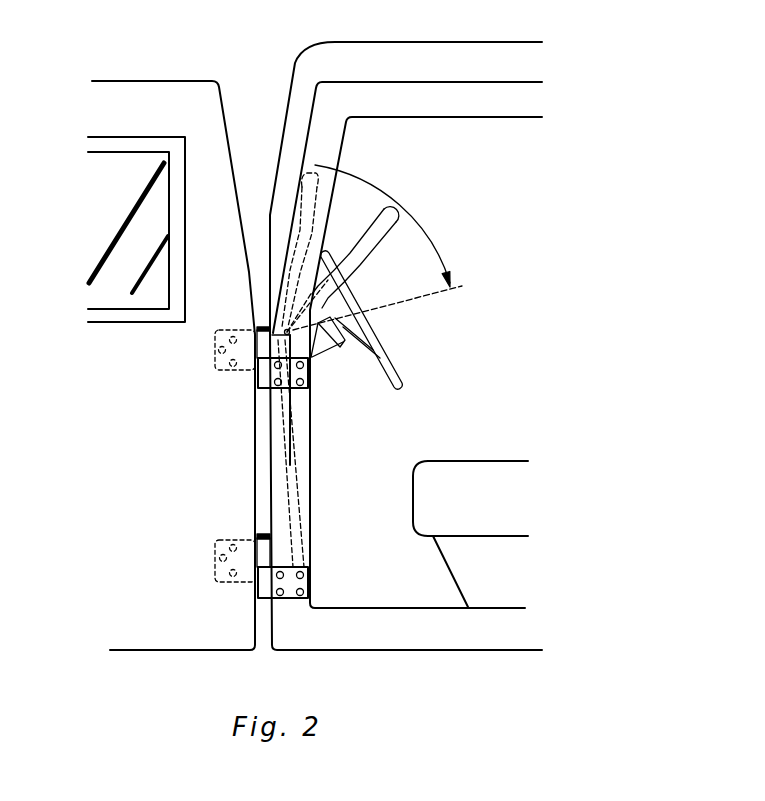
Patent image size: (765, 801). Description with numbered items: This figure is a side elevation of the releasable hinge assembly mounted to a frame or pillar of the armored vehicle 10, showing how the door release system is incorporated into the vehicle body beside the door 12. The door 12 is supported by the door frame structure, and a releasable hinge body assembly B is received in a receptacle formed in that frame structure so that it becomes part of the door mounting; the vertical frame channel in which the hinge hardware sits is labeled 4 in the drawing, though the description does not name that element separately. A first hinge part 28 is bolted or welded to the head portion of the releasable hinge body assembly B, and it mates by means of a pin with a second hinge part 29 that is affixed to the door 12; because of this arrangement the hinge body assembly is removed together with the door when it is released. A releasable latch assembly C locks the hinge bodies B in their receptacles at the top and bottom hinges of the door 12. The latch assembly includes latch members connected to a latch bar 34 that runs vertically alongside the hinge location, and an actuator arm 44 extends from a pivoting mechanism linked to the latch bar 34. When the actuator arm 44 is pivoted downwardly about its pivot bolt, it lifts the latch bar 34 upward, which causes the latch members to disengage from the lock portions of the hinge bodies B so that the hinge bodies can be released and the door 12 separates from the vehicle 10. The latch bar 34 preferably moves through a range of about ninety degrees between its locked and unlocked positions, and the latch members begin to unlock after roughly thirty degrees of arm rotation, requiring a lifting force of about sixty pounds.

The armored vehicle 10 is at (424, 42).
The door 12 is at (136, 80).
The second hinge part 29 is at (215, 356).
The first hinge part 28 is at (255, 392).
The steering column housing 4 is at (291, 465).
The latch bar 34 is at (293, 470).
The actuator arm 44 is at (353, 262).
The releasable hinge body assembly B is at (240, 386).
The releasable latch assembly C is at (320, 372).